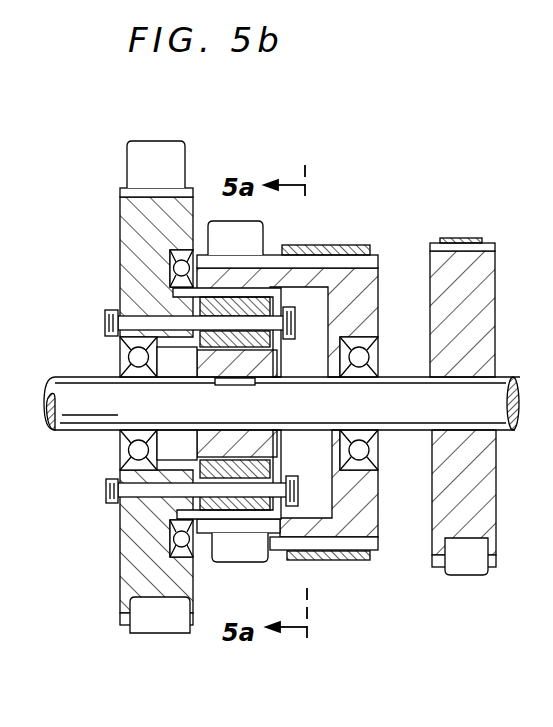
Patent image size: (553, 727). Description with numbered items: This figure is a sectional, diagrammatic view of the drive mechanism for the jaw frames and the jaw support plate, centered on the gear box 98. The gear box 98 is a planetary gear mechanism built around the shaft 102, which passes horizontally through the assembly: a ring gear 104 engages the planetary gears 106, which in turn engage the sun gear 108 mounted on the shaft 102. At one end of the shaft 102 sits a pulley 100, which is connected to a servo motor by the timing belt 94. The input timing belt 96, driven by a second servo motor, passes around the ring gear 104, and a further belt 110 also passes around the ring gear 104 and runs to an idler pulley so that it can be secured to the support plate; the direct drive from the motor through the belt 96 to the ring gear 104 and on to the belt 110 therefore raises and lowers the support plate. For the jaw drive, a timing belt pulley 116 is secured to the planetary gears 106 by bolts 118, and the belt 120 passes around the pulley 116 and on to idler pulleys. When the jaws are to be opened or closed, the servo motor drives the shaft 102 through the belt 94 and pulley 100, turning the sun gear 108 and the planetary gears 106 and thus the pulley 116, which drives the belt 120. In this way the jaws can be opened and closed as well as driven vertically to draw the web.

The timing belt 94 is at (466, 563).
The timing belt 96 is at (324, 245).
The gear box 98 is at (380, 551).
The pulley 100 is at (497, 547).
The shaft 102 is at (521, 371).
The ring gear 104 is at (380, 274).
The planetary gears 106 is at (178, 307).
The sun gear 108 is at (188, 372).
The belt 110 is at (248, 232).
The timing belt pulley 116 is at (124, 251).
The bolts 118 is at (105, 322).
The belt 120 is at (160, 162).